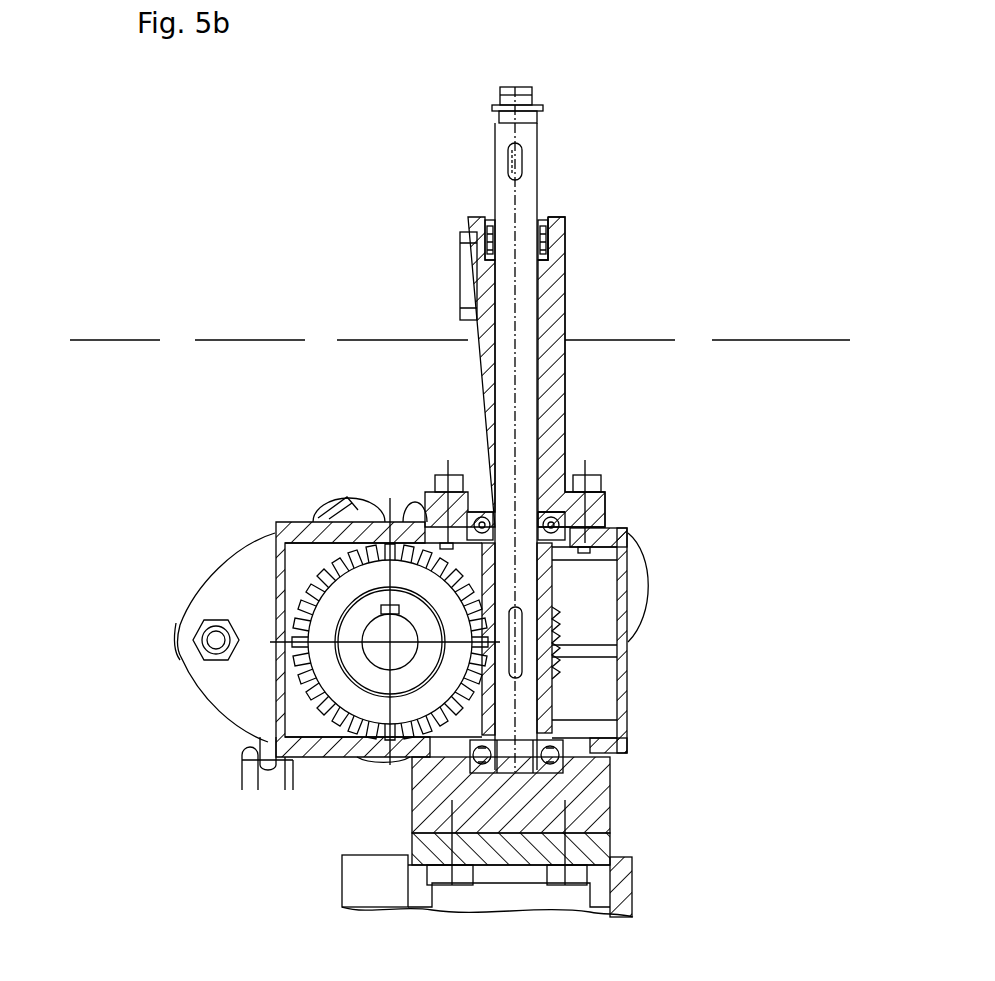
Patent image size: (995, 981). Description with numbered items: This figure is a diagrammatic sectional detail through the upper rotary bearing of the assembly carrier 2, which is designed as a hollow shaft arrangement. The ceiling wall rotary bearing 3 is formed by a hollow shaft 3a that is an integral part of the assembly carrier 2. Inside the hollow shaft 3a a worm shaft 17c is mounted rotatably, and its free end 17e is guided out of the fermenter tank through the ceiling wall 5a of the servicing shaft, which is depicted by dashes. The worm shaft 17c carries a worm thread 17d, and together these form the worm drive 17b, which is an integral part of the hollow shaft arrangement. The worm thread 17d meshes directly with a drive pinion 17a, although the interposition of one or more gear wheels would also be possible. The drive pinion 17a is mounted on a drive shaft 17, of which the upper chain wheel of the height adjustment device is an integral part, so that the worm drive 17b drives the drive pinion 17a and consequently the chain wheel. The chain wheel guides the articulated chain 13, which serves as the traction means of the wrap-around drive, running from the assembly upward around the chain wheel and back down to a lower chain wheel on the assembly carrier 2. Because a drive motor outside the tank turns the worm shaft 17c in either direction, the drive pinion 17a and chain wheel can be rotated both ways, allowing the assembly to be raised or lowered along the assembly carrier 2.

The assembly carrier 2 is at (626, 878).
The ceiling wall rotary bearing 3 is at (526, 454).
The hollow shaft 3a is at (551, 318).
The ceiling wall 5a is at (122, 340).
The articulated chain 13 is at (243, 762).
The drive shaft 17 is at (367, 630).
The drive pinion 17a is at (258, 528).
The worm drive 17b is at (583, 597).
The worm shaft 17c is at (558, 429).
The worm thread 17d is at (552, 663).
The free end 17e is at (525, 192).